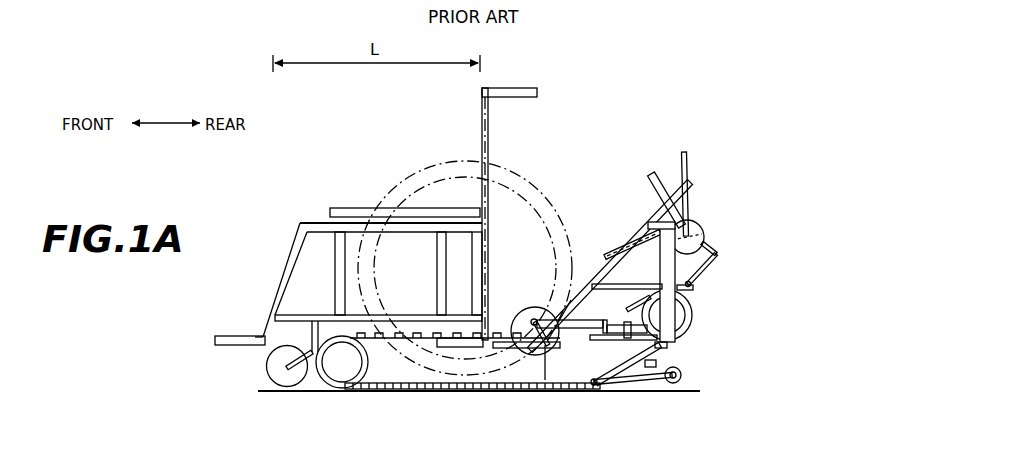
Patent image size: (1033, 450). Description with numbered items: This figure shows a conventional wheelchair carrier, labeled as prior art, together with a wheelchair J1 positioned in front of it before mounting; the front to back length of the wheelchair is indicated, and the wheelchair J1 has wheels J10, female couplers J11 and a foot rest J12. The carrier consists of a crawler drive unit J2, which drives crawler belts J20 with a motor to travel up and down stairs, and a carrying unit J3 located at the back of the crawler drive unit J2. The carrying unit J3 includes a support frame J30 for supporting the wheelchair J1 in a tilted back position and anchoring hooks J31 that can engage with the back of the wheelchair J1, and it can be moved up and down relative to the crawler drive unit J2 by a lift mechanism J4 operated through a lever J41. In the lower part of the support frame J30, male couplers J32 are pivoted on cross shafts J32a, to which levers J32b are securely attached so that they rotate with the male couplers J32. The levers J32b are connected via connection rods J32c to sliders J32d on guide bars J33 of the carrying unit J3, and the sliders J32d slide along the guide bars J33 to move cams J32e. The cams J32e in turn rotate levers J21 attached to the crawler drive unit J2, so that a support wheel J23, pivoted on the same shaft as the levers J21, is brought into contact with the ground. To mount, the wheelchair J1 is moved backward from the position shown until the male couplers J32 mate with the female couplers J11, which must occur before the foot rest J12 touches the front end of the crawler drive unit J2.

The wheelchair J1 is at (360, 200).
The wheels J10 is at (530, 173).
The female couplers J11 is at (440, 315).
The foot rest J12 is at (235, 336).
The crawler drive unit J2 is at (400, 362).
The crawler belts J20 is at (433, 388).
The levers J21 is at (610, 352).
The support wheel J23 is at (686, 382).
The carrying unit J3 is at (643, 218).
The support frame J30 is at (628, 242).
The anchoring hooks J31 is at (651, 172).
The male couplers J32 is at (513, 348).
The cross shafts J32a is at (547, 345).
The levers J32b is at (528, 308).
The connection rods J32c is at (553, 300).
The sliders J32d is at (655, 358).
The cams J32e is at (662, 345).
The guide bars J33 is at (643, 318).
The lift mechanism J4 is at (722, 243).
The lever J41 is at (687, 154).